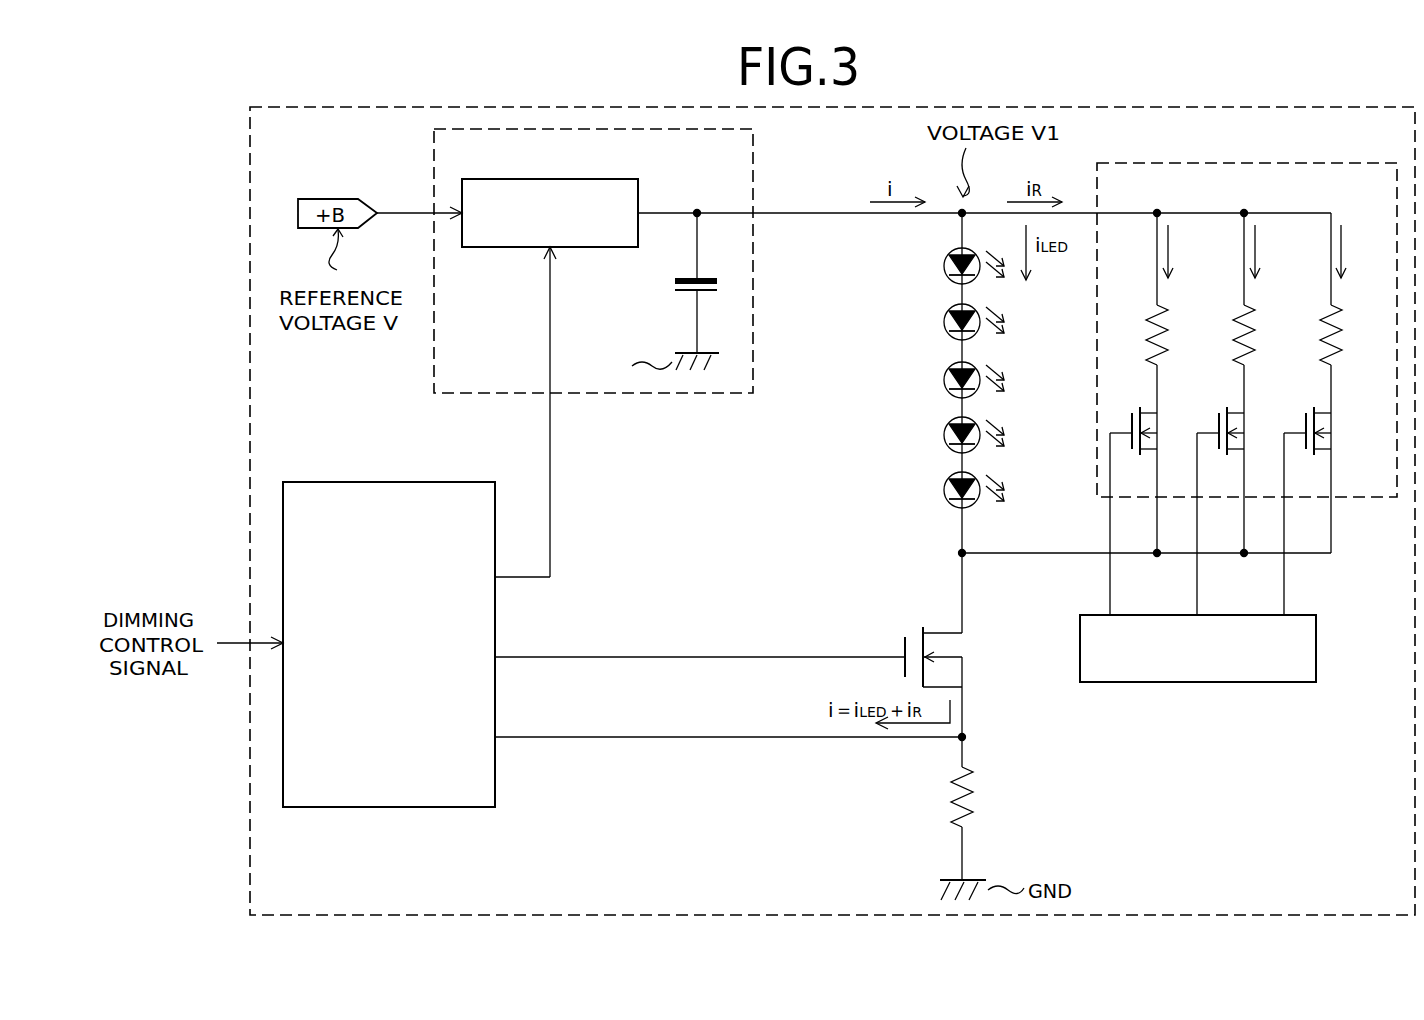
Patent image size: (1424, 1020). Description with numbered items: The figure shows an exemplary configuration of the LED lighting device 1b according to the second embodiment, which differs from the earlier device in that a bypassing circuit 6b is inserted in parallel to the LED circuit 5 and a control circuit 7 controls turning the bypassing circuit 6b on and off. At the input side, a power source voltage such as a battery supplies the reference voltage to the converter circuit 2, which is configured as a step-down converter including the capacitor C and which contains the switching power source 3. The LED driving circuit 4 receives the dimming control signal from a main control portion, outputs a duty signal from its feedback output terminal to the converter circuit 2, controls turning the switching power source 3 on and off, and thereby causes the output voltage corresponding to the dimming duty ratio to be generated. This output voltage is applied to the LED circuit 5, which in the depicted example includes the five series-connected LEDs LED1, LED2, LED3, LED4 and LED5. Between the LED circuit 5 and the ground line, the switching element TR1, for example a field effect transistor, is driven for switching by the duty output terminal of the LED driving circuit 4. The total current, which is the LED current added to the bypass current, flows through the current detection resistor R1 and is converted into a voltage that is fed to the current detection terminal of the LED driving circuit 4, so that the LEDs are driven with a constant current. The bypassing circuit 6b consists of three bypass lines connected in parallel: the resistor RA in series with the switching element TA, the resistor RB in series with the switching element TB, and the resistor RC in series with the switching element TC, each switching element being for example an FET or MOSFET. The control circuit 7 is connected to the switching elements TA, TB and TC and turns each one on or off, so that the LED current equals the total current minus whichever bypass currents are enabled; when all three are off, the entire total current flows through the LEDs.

The LED lighting device 1b is at (1335, 107).
The converter circuit 2 is at (753, 153).
The switching power source 3 is at (516, 179).
The LED driving circuit 4 is at (452, 482).
The LED circuit 5 is at (896, 383).
The bypassing circuit 6b is at (1170, 163).
The control circuit 7 is at (1221, 683).
The capacitor C is at (675, 284).
The switching element TR1 is at (966, 668).
The current detection resistor R1 is at (975, 797).
The LED LED1 is at (944, 266).
The LED LED2 is at (944, 322).
The LED LED3 is at (944, 380).
The LED LED4 is at (944, 435).
The LED LED5 is at (944, 490).
The resistor RA is at (1163, 316).
The resistor RB is at (1250, 316).
The resistor RC is at (1337, 316).
The switching element TA is at (1160, 434).
The switching element TB is at (1247, 434).
The switching element TC is at (1334, 434).